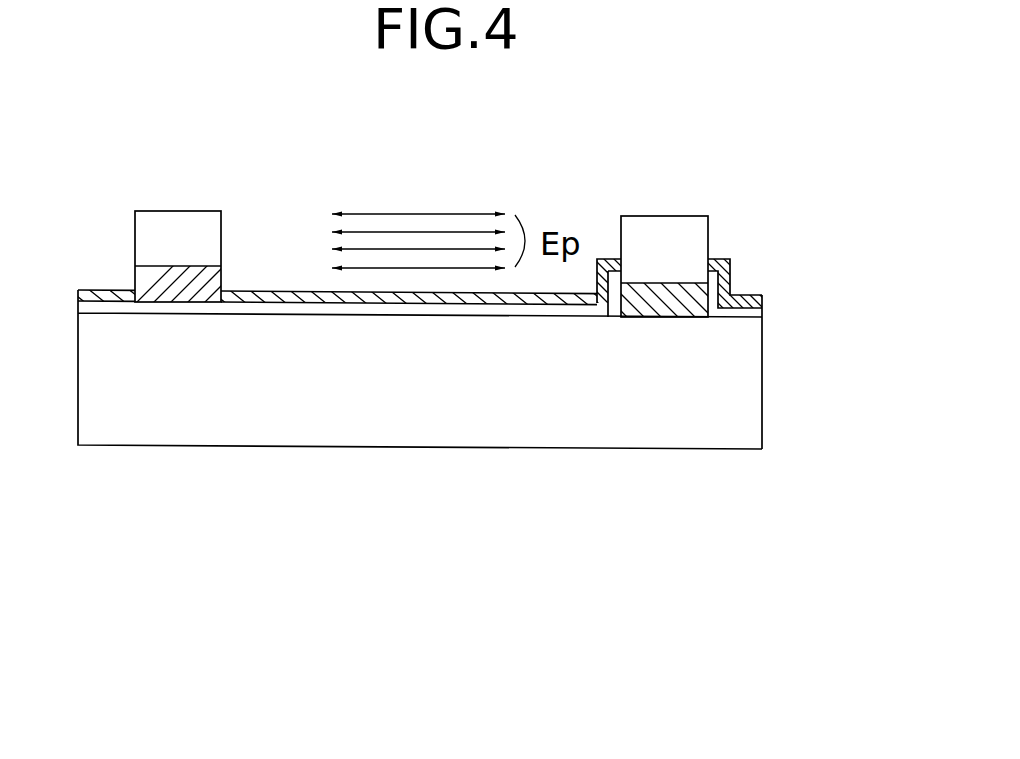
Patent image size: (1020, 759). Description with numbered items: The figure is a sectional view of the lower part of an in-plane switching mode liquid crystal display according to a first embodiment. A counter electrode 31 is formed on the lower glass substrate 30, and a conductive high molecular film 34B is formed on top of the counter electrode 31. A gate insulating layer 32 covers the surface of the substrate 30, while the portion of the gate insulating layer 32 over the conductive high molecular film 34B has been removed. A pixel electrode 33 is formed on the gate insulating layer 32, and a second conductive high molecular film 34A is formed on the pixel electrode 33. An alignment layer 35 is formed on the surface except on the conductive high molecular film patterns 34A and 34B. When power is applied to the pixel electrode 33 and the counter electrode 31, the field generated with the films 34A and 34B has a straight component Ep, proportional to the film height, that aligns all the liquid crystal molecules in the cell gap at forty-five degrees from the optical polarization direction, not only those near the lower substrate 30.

The lower substrate 30 is at (757, 388).
The counter electrode 31 is at (665, 313).
The gate insulating layer 32 is at (758, 310).
The pixel electrode 33 is at (170, 298).
The conductive high molecular film 34A is at (178, 219).
The conductive high molecular film 34B is at (667, 222).
The alignment layer 35 is at (727, 273).